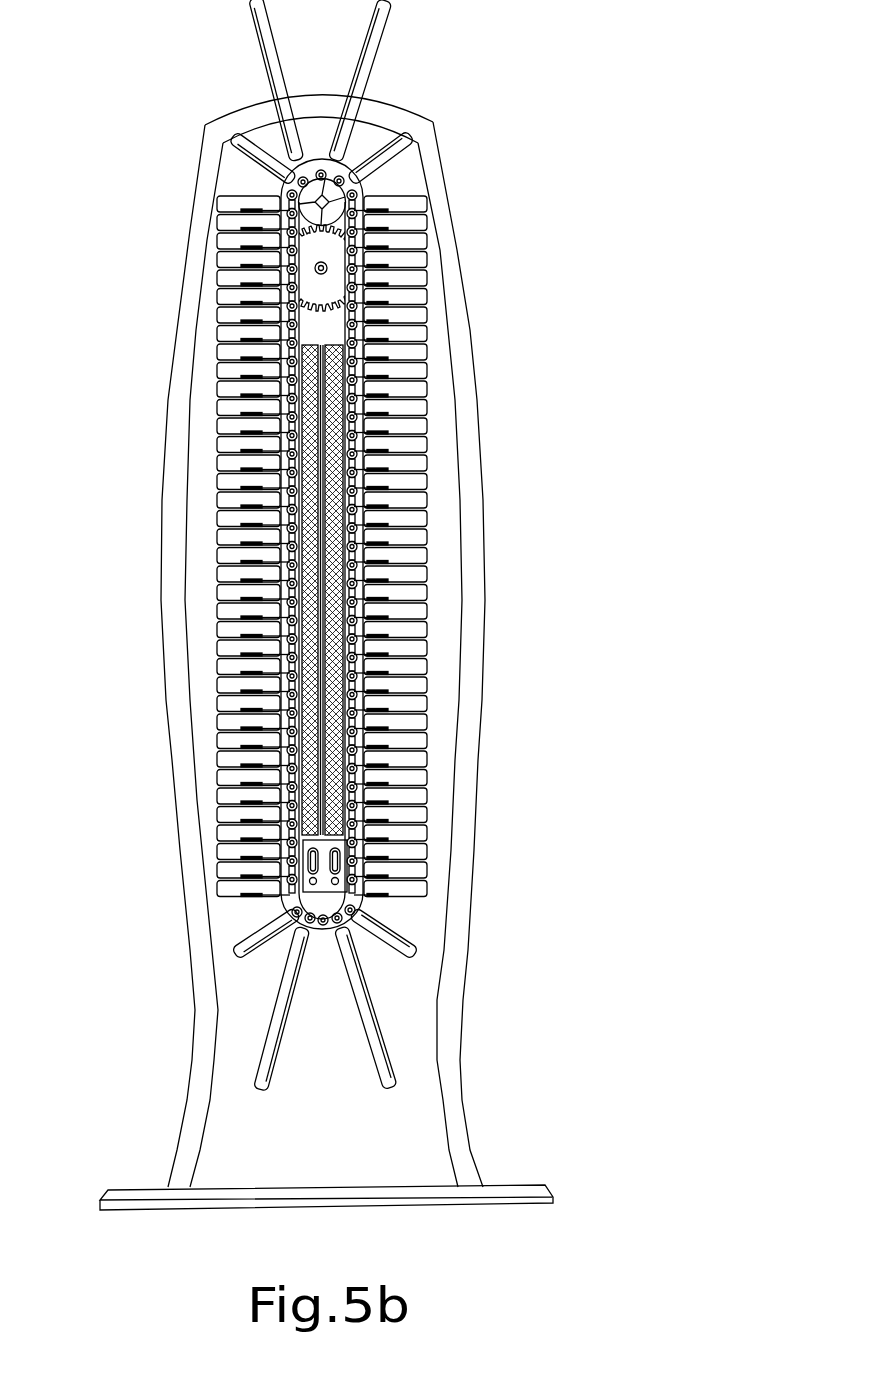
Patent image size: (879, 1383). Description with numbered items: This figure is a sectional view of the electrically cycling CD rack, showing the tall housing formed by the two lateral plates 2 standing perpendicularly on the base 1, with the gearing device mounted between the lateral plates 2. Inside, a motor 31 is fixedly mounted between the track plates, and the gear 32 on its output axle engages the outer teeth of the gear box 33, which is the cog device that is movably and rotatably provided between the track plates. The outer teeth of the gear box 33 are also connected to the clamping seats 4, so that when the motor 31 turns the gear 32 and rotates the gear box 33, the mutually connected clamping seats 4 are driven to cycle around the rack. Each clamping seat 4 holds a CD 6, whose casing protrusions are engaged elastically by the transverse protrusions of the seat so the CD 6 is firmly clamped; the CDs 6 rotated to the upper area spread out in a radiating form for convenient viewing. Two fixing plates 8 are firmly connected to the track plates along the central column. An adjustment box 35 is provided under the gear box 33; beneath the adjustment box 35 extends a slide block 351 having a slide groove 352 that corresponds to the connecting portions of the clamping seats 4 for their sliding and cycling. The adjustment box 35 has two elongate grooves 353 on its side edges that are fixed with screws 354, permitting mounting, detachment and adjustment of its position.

The base 1 is at (413, 1187).
The lateral plate 2 is at (203, 192).
The clamping seat 4 is at (376, 100).
The CD 6 is at (272, 55).
The fixing plate 8 is at (302, 414).
The motor 31 is at (315, 268).
The gear 32 is at (335, 280).
The gear box 33 is at (346, 187).
The adjustment box 35 is at (316, 882).
The slide block 351 is at (372, 903).
The slide groove 352 is at (357, 910).
The elongate groove 353 is at (317, 862).
The screw 354 is at (310, 880).